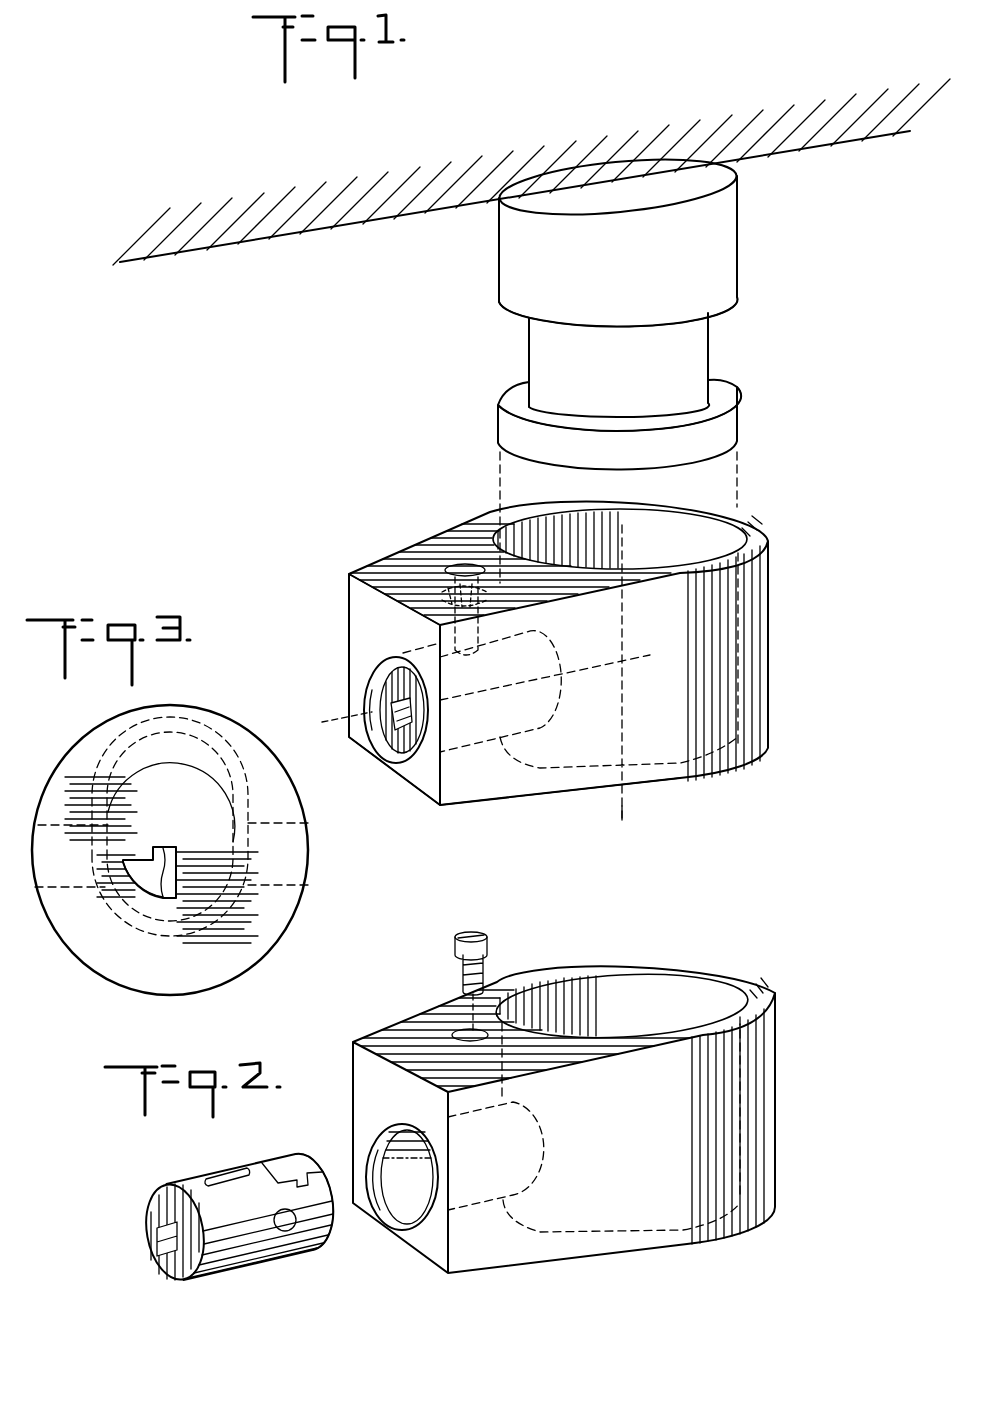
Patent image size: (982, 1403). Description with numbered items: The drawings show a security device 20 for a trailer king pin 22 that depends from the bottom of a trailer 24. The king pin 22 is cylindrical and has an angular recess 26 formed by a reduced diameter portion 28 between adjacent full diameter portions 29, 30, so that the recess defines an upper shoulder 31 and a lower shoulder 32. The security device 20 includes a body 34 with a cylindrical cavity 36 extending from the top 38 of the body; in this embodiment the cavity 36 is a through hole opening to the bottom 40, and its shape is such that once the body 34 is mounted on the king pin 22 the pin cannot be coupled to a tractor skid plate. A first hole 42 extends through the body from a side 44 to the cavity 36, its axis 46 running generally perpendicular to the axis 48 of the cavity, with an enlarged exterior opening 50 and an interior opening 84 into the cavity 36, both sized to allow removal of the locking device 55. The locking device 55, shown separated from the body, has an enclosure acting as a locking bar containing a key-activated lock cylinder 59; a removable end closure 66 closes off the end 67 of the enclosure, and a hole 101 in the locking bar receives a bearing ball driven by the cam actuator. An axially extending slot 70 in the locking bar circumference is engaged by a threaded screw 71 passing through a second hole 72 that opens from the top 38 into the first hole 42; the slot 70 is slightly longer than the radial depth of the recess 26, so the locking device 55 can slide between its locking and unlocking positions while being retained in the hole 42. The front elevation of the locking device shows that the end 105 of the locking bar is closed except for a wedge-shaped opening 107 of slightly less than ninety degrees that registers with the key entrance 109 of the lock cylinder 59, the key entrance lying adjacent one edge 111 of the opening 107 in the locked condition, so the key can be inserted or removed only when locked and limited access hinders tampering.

In FIG. 1, the security device 20 is at (575, 655).
In FIG. 2, the security device 20 is at (549, 1124).
In FIG. 1, the king pin 22 is at (666, 367).
In FIG. 1, the trailer 24 is at (831, 152).
In FIG. 1, the angular recess 26 is at (728, 353).
In FIG. 1, the reduced diameter portion 28 is at (552, 348).
In FIG. 1, the full diameter portion 29 is at (740, 231).
In FIG. 1, the full diameter portion 30 is at (658, 421).
In FIG. 1, the upper shoulder 31 is at (738, 300).
In FIG. 1, the lower shoulder 32 is at (733, 402).
In FIG. 1, the body 34 is at (775, 690).
In FIG. 2, the body 34 is at (784, 1122).
In FIG. 1, the cylindrical cavity 36 is at (677, 542).
In FIG. 1, the top 38 is at (473, 542).
In FIG. 1, the bottom 40 is at (491, 806).
In FIG. 1, the first hole 42 is at (380, 673).
In FIG. 2, the first hole 42 is at (395, 1152).
In FIG. 1, the side 44 is at (365, 599).
In FIG. 1, the axis of the hole 46 is at (311, 727).
In FIG. 1, the axis of the cavity 48 is at (624, 812).
In FIG. 1, the exterior opening 50 is at (386, 748).
In FIG. 2, the exterior opening 50 is at (390, 1215).
In FIG. 1, the locking device 55 is at (398, 693).
In FIG. 3, the locking device 55 is at (262, 933).
In FIG. 2, the locking device 55 is at (222, 1215).
In FIG. 3, the lock cylinder 59 is at (143, 873).
In FIG. 2, the removable end closure 66 is at (288, 1160).
In FIG. 2, the end 67 is at (325, 1223).
In FIG. 2, the slot 70 is at (245, 1172).
In FIG. 1, the threaded screw 71 is at (440, 572).
In FIG. 2, the threaded screw 71 is at (493, 965).
In FIG. 1, the second hole 72 is at (457, 566).
In FIG. 2, the second hole 72 is at (452, 1035).
In FIG. 1, the interior opening 84 is at (553, 662).
In FIG. 2, the hole 101 is at (285, 1231).
In FIG. 3, the end 105 is at (287, 855).
In FIG. 2, the end 105 is at (160, 1202).
In FIG. 3, the wedge-shaped opening 107 is at (130, 888).
In FIG. 2, the wedge-shaped opening 107 is at (162, 1247).
In FIG. 3, the key entrance 109 is at (163, 897).
In FIG. 3, the edge 111 is at (173, 895).